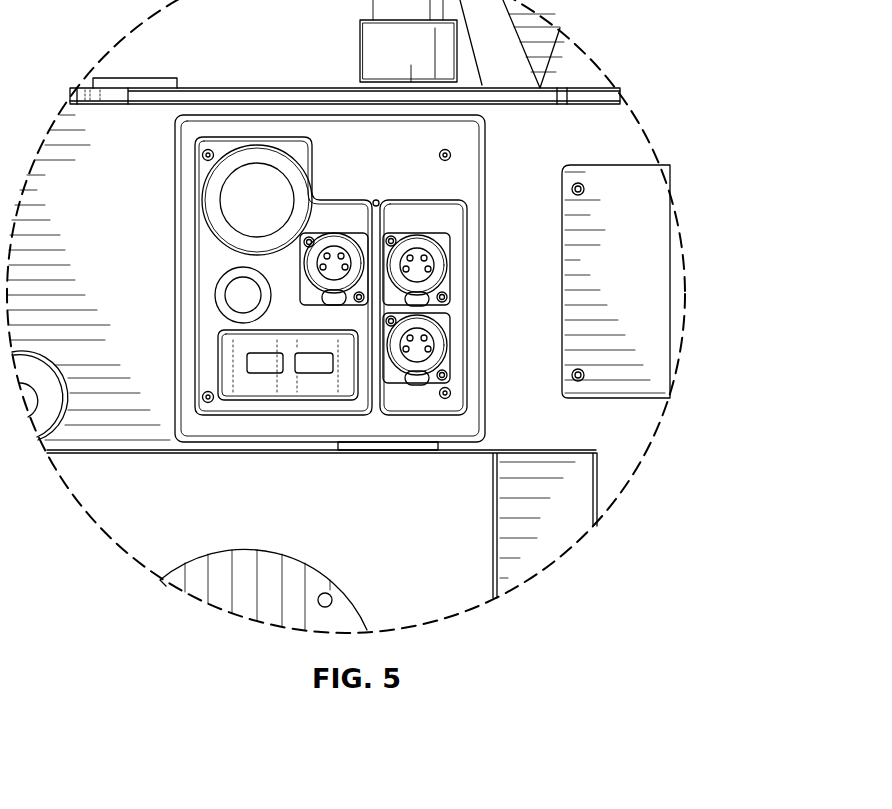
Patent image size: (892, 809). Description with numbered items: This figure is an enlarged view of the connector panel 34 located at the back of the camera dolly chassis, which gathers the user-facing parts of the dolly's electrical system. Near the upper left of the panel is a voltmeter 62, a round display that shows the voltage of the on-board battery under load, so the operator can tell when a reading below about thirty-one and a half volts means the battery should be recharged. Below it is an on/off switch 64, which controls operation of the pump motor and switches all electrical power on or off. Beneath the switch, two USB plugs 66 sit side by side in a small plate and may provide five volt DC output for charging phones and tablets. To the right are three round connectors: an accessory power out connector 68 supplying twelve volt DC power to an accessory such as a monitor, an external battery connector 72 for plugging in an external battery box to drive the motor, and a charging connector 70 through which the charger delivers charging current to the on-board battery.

The connector panel 34 is at (533, 311).
The voltmeter 62 is at (267, 192).
The on/off switch 64 is at (243, 296).
The USB plugs 66 is at (265, 362).
The accessory power out connector 68 is at (335, 258).
The charging connector 70 is at (403, 368).
The external battery connector 72 is at (423, 268).